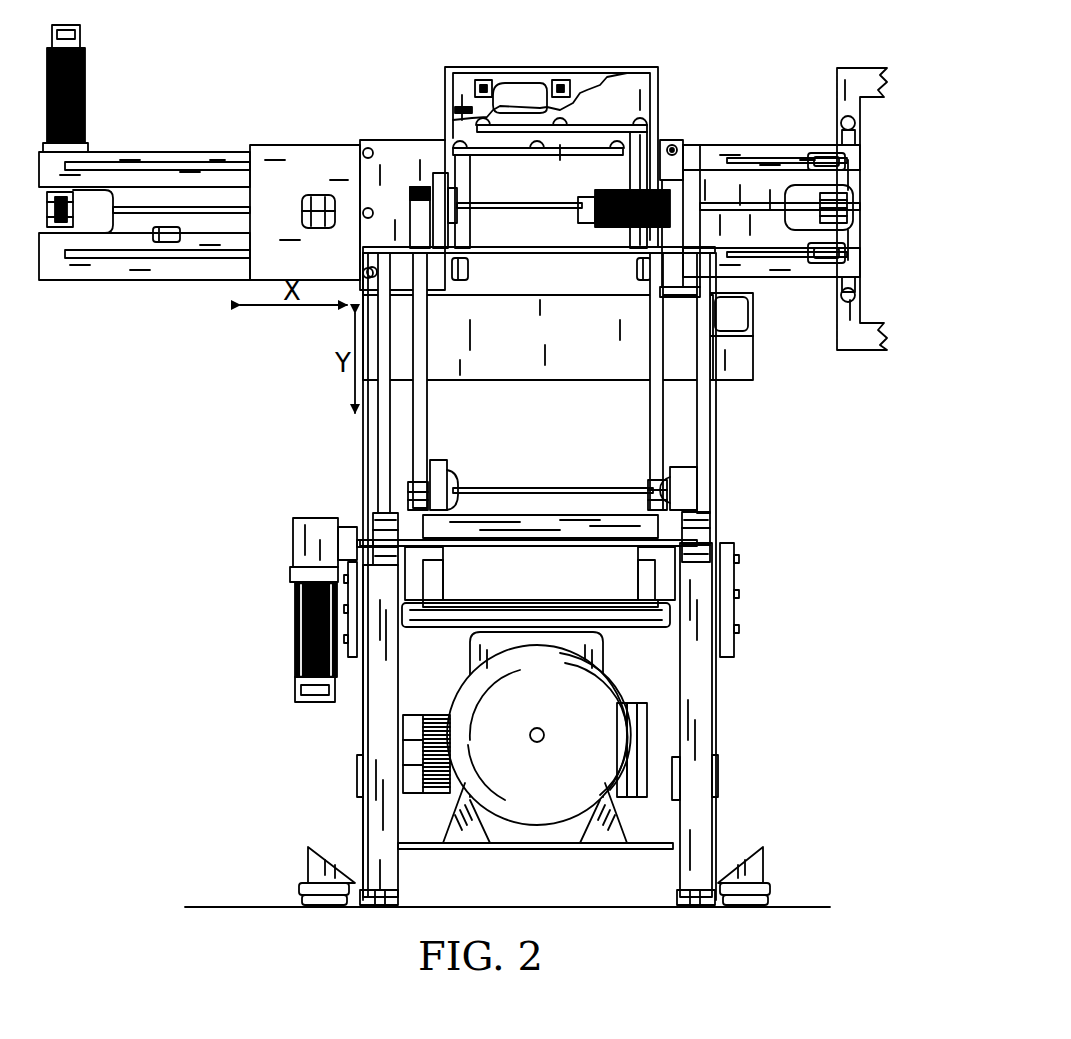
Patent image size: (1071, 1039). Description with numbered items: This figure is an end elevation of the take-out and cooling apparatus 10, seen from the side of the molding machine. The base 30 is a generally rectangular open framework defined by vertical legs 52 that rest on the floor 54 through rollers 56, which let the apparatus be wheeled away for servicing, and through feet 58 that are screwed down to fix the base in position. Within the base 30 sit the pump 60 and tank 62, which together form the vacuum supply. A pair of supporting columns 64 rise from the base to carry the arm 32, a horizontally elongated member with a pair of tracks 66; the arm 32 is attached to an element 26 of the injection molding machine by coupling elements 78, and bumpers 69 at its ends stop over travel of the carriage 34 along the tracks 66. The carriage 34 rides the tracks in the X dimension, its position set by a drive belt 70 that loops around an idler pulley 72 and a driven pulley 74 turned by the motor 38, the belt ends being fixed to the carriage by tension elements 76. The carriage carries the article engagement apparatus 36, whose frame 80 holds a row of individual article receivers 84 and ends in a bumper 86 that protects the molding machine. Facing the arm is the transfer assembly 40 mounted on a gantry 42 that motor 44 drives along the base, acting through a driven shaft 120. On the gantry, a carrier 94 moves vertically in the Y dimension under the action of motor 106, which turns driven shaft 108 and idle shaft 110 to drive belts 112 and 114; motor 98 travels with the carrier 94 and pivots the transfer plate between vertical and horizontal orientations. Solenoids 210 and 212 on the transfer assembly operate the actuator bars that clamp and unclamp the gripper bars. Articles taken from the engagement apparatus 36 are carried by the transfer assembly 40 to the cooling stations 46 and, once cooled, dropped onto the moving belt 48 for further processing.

The take-out and cooling apparatus 10 is at (197, 413).
The element of the injection molding machine 26 is at (842, 82).
The base 30 is at (367, 723).
The arm 32 is at (193, 177).
The carriage 34 is at (330, 157).
The article engagement apparatus 36 is at (493, 83).
The motor 38 is at (90, 66).
The transfer assembly 40 is at (643, 107).
The gantry 42 is at (382, 455).
The motor 44 is at (293, 652).
The cooling stations 46 is at (600, 513).
The moving belt 48 is at (618, 630).
The vertical legs 52 is at (373, 820).
The floor 54 is at (500, 903).
The rollers 56 is at (397, 902).
The feet 58 is at (308, 891).
The pump 60 is at (412, 717).
The tank 62 is at (598, 690).
The supporting columns 64 is at (373, 440).
The tracks 66 is at (178, 163).
The bumpers 69 is at (820, 150).
The drive belt 70 is at (230, 213).
The idler pulley 72 is at (847, 198).
The driven pulley 74 is at (82, 225).
The tension elements 76 is at (317, 228).
The coupling elements 78 is at (840, 137).
The frame 80 is at (597, 77).
The article receivers 84 is at (483, 80).
The bumper 86 is at (662, 140).
The carrier 94 is at (497, 367).
The motor 98 is at (755, 313).
The motor 106 is at (600, 226).
The driven shaft 108 is at (532, 203).
The idle shaft 110 is at (567, 487).
The belt 112 is at (427, 397).
The belt 114 is at (647, 453).
The driven shaft 120 is at (533, 550).
The solenoid 210 is at (458, 281).
The solenoid 212 is at (640, 281).